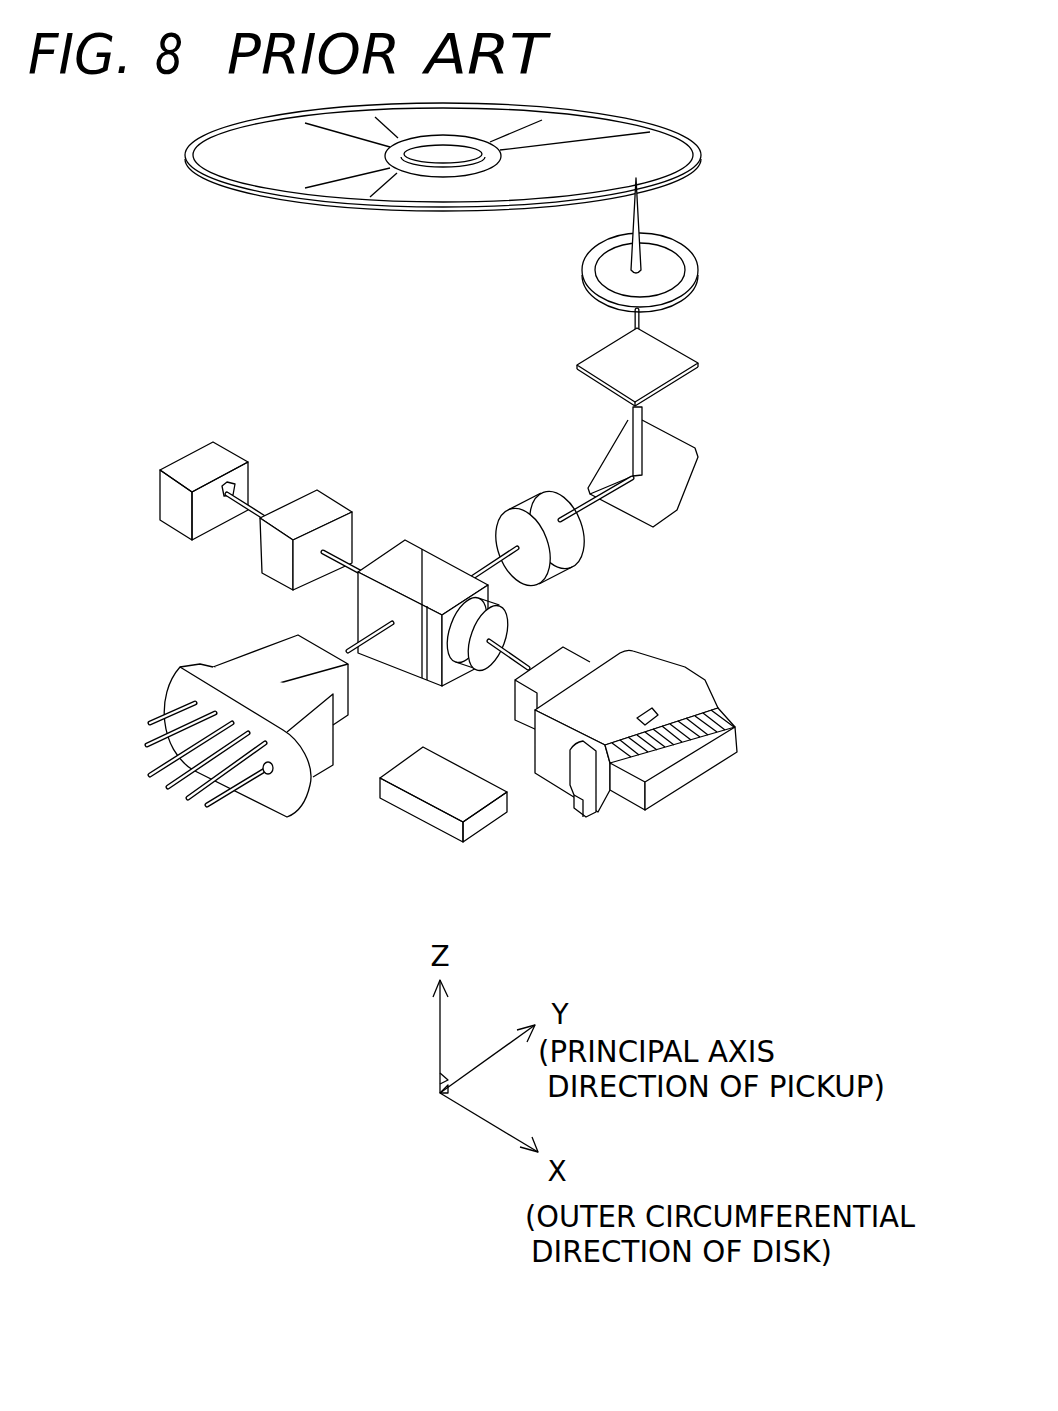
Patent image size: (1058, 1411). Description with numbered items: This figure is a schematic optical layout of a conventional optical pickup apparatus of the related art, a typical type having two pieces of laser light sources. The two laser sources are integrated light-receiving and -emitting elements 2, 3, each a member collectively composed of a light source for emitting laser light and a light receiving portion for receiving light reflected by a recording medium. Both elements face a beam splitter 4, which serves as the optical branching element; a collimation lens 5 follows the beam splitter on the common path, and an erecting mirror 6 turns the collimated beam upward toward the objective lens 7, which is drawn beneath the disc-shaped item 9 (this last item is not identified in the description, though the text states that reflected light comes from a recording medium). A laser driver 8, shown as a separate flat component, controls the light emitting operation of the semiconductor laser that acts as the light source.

The integrated light-receiving and -emitting element 2 is at (237, 667).
The integrated light-receiving and -emitting element 3 is at (633, 667).
The beam splitter 4 is at (395, 545).
The collimation lens 5 is at (563, 555).
The erecting mirror 6 is at (670, 450).
The objective lens 7 is at (684, 260).
The laser driver 8 is at (433, 795).
The optical disk 9 is at (647, 150).